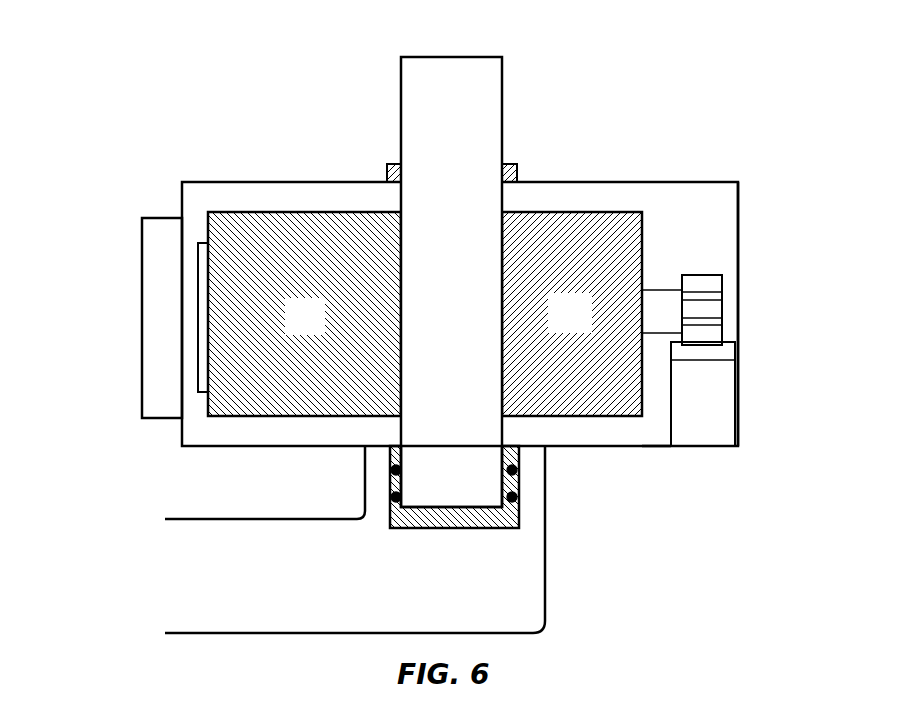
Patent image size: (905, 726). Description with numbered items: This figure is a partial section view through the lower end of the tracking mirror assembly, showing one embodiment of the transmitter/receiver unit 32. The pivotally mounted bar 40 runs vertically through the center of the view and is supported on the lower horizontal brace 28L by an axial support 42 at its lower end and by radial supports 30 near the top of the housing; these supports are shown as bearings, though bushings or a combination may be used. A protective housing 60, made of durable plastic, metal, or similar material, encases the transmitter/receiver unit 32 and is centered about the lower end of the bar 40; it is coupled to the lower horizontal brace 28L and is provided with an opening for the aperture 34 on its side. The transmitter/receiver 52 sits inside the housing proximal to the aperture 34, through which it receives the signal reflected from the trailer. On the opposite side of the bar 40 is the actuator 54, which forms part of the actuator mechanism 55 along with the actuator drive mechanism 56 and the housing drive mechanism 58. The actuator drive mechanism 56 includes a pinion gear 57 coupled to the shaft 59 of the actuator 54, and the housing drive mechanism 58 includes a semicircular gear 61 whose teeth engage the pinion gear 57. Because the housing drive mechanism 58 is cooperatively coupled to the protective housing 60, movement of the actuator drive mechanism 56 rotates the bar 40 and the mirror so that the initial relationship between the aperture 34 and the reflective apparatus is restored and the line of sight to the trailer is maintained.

The transmitter/receiver unit 32 is at (244, 166).
The radial supports 30 is at (485, 153).
The aperture 34 is at (198, 322).
The pivotally mounted bar 40 is at (468, 298).
The axial support 42 is at (454, 515).
The transmitter/receiver 52 is at (304, 314).
The actuator 54 is at (572, 314).
The actuator mechanism 55 is at (653, 436).
The actuator drive mechanism 56 is at (754, 290).
The pinion gear 57 is at (708, 310).
The housing drive mechanism 58 is at (748, 391).
The shaft 59 is at (674, 287).
The protective housing 60 is at (782, 314).
The semicircular gear 61 is at (748, 391).
The lower horizontal brace 28L is at (262, 589).